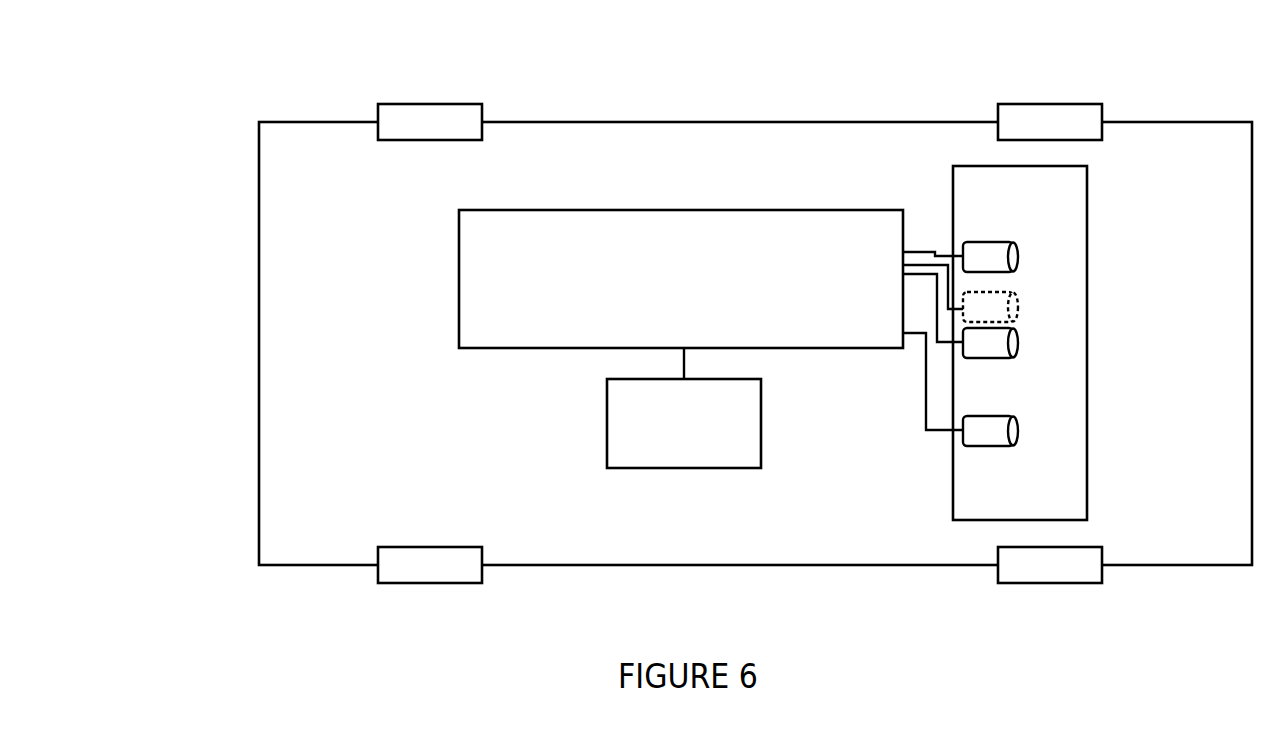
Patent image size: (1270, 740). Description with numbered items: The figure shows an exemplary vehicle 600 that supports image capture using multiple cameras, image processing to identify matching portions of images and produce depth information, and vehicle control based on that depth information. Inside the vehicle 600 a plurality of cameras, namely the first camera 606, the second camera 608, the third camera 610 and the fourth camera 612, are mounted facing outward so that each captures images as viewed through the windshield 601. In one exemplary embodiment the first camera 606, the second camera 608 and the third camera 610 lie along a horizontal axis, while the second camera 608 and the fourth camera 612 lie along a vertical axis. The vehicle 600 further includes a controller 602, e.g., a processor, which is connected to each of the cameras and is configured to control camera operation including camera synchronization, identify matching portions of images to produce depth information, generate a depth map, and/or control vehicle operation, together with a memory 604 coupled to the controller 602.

The vehicle 600 is at (128, 30).
The windshield 601 is at (972, 522).
The controller 602 is at (458, 278).
The memory 604 is at (606, 423).
The camera 1 (C1) 606 is at (983, 447).
The camera 2 (C2) 608 is at (988, 358).
The camera 3 (C3) 610 is at (989, 238).
The camera 4 (C4) 612 is at (988, 292).